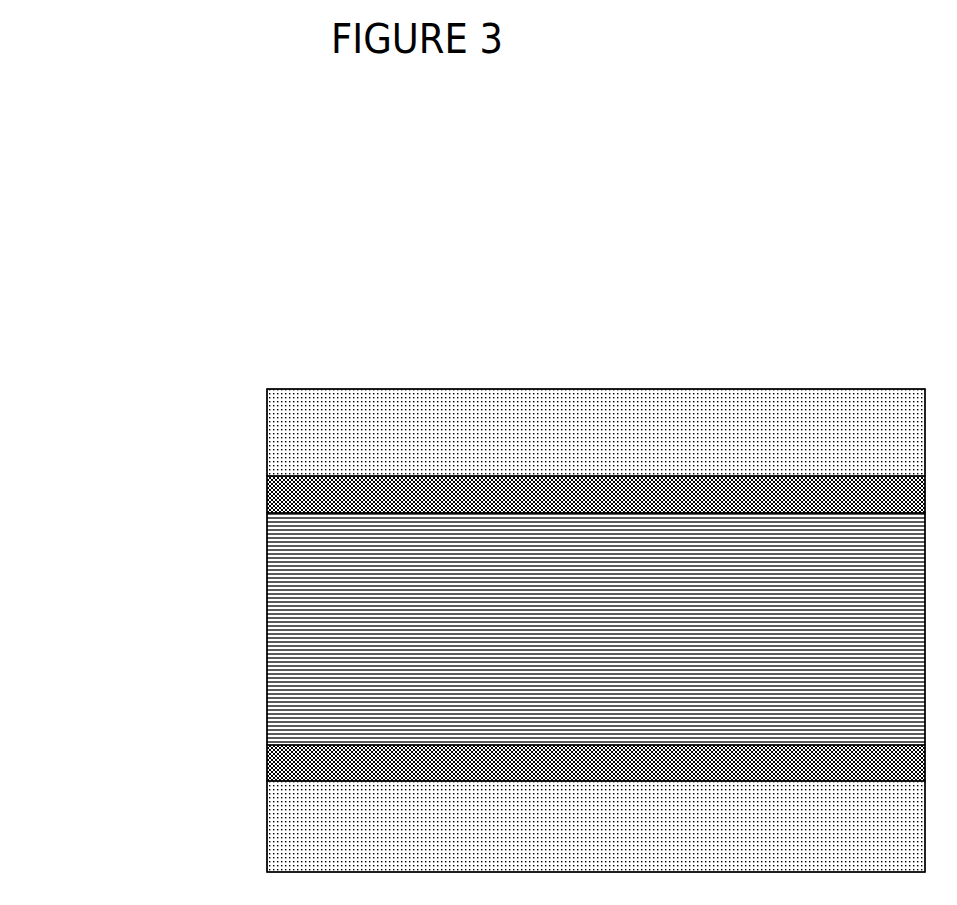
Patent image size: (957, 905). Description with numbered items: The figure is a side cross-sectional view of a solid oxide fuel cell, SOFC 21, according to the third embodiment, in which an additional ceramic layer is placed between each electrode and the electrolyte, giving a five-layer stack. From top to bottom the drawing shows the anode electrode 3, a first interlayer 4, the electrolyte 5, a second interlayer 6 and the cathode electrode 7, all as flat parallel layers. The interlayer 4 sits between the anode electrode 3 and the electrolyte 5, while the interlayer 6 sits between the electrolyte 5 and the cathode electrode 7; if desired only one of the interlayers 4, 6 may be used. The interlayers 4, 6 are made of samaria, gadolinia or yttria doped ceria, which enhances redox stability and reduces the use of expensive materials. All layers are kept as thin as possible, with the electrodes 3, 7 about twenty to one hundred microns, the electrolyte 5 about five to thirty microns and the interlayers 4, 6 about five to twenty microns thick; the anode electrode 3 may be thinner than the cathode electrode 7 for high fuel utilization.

The SOFC 21 is at (623, 303).
The anode electrode 3 is at (260, 417).
The interlayer 4 is at (260, 493).
The electrolyte 5 is at (247, 622).
The interlayer 6 is at (267, 752).
The cathode electrode 7 is at (260, 838).